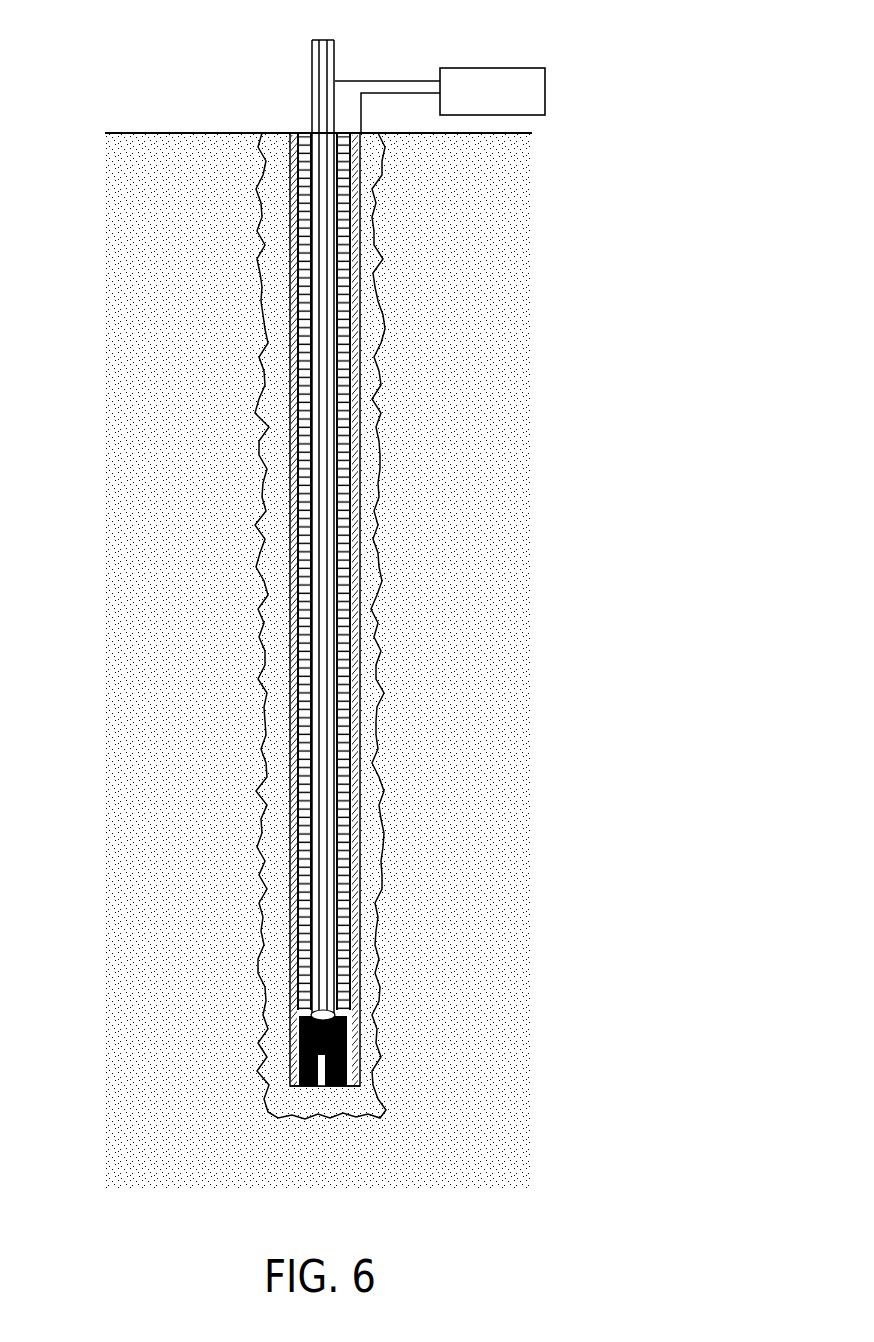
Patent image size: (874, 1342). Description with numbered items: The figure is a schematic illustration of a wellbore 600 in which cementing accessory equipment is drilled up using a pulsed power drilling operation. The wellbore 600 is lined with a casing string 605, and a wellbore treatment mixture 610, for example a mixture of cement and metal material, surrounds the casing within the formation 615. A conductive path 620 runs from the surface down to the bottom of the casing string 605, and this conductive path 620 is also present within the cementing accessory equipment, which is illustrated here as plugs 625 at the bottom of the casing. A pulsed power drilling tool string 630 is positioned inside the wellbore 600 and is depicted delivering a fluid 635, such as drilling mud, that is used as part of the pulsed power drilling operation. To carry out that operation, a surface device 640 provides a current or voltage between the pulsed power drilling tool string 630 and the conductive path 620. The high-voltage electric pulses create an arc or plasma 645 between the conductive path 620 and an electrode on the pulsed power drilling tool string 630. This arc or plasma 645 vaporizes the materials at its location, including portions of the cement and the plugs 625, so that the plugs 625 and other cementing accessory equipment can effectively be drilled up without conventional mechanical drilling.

The wellbore 600 is at (258, 84).
The casing string 605 is at (290, 875).
The wellbore treatment mixture 610 is at (383, 815).
The formation 615 is at (528, 1036).
The conductive path 620 is at (360, 277).
The plugs 625 is at (312, 1080).
The pulsed power drilling tool string 630 is at (335, 55).
The fluid 635 is at (308, 322).
The surface device 640 is at (510, 107).
The arc or plasma 645 is at (314, 1014).